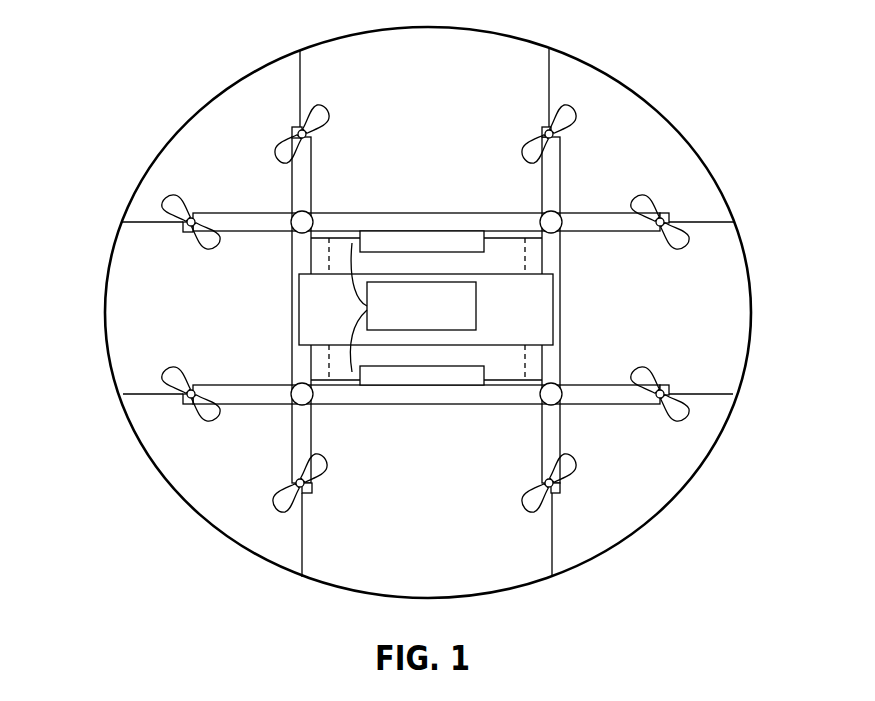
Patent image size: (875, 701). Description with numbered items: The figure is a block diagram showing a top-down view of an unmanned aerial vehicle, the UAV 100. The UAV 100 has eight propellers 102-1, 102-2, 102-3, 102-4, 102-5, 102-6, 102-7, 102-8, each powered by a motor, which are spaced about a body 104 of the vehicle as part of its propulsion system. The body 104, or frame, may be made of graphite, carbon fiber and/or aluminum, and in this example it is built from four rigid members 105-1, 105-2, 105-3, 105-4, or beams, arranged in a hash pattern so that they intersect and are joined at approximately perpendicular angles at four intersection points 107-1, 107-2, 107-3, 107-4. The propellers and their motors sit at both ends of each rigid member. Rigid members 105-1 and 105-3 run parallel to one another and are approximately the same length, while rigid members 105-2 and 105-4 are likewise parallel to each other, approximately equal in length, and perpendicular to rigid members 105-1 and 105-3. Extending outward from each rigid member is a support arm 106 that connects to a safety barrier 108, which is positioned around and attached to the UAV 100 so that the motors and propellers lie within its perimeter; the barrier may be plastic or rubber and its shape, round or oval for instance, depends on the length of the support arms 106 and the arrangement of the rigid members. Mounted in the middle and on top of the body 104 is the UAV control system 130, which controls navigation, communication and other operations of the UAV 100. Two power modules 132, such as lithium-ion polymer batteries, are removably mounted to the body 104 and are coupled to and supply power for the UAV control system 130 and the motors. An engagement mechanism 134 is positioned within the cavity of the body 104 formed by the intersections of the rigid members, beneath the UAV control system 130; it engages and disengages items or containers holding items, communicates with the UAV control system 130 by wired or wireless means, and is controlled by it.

The unmanned aerial vehicle 100 is at (776, 84).
The propeller 102-1 is at (330, 107).
The propeller 102-2 is at (578, 120).
The propeller 102-3 is at (687, 249).
The propeller 102-4 is at (647, 372).
The propeller 102-5 is at (577, 458).
The propeller 102-6 is at (330, 458).
The propeller 102-7 is at (180, 369).
The propeller 102-8 is at (184, 193).
The body 104 is at (426, 310).
The rigid member 105-1 is at (588, 212).
The rigid member 105-2 is at (560, 183).
The rigid member 105-3 is at (590, 386).
The rigid member 105-4 is at (312, 177).
The support arm 106 is at (299, 80).
The intersection point 107-1 is at (291, 240).
The intersection point 107-2 is at (560, 237).
The intersection point 107-3 is at (563, 405).
The intersection point 107-4 is at (294, 406).
The safety barrier 108 is at (645, 97).
The UAV control system 130 is at (542, 308).
The power module 132 is at (417, 309).
The engagement mechanism 134 is at (498, 245).